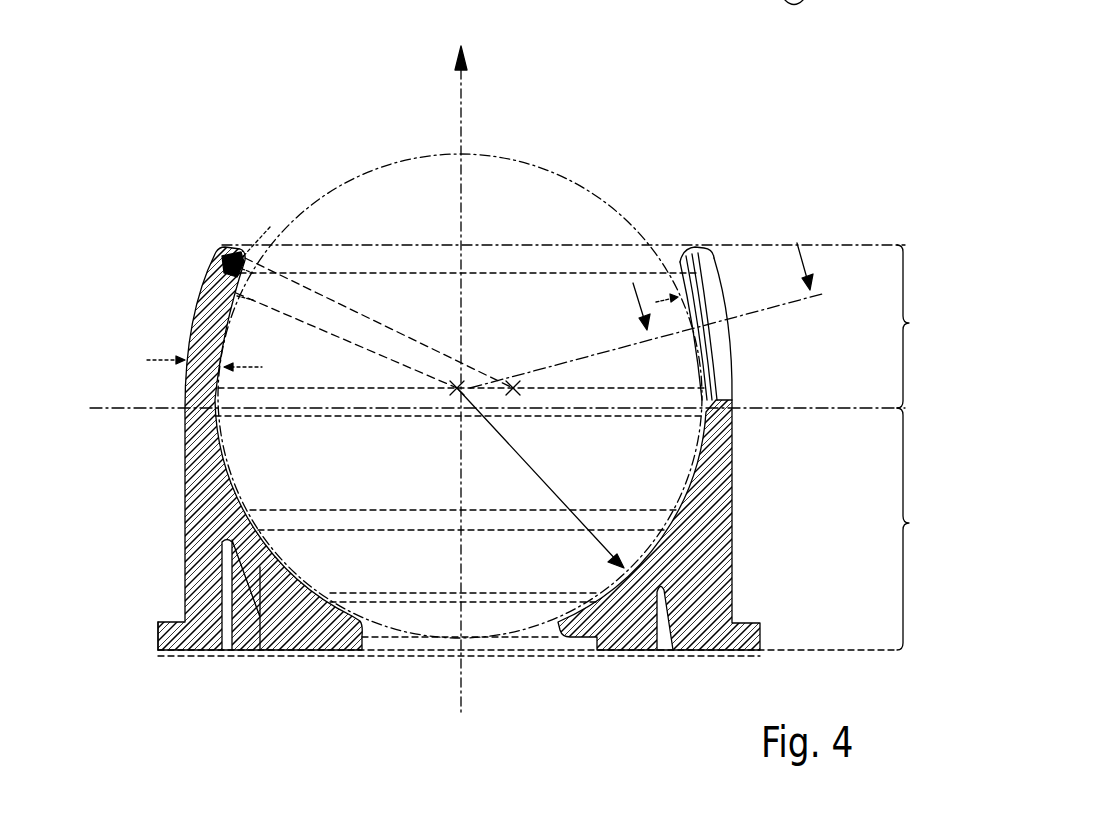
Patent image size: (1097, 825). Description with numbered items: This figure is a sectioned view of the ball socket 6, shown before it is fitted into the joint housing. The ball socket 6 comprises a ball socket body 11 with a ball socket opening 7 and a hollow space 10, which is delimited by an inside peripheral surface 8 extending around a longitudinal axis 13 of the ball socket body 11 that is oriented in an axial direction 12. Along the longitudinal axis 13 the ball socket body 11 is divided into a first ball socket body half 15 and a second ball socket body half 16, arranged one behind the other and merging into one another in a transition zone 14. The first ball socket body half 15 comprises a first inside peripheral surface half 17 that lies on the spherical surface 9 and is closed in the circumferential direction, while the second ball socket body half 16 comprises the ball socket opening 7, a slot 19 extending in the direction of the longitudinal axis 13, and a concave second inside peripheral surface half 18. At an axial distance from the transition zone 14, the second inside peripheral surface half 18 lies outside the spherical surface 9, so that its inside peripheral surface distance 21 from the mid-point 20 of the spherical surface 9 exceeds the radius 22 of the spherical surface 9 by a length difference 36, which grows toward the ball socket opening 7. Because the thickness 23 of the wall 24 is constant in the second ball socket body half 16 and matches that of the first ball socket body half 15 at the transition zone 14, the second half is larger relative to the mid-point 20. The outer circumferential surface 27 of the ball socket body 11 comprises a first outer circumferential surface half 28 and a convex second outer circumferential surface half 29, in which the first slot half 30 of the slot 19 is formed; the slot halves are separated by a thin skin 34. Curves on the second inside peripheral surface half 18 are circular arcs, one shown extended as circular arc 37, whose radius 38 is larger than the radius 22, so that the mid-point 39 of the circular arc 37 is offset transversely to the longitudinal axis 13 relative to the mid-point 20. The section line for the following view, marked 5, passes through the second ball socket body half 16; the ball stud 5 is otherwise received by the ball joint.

The ball stud 5 is at (648, 313).
The ball socket 6 is at (226, 92).
The ball socket opening 7 is at (616, 238).
The inside peripheral surface 8 is at (732, 478).
The spherical surface 9 is at (531, 165).
The hollow space 10 is at (407, 565).
The ball socket body 11 is at (180, 592).
The axial direction 12 is at (457, 88).
The longitudinal axis 13 is at (458, 200).
The transition zone 14 is at (176, 404).
The first ball socket body half 15 is at (919, 529).
The second ball socket body half 16 is at (919, 326).
The first inside peripheral surface half 17 is at (232, 458).
The second inside peripheral surface half 18 is at (228, 322).
The slot 19 is at (746, 342).
The mid-point of the spherical surface 20 is at (457, 391).
The inside peripheral surface distance 21 is at (320, 338).
The radius of the spherical surface 22 is at (540, 468).
The thickness of the wall 23 is at (267, 328).
The wall of the ball socket body 24 is at (222, 276).
The outer circumferential surface 27 is at (742, 527).
The first outer circumferential surface half 28 is at (184, 431).
The second outer circumferential surface half 29 is at (202, 293).
The first slot half 30 is at (733, 383).
The skin 34 is at (730, 360).
The length difference 36 is at (720, 276).
The circular arc 37 is at (270, 227).
The radius of the circular arc 38 is at (398, 335).
The mid-point of the circular arc 39 is at (515, 390).